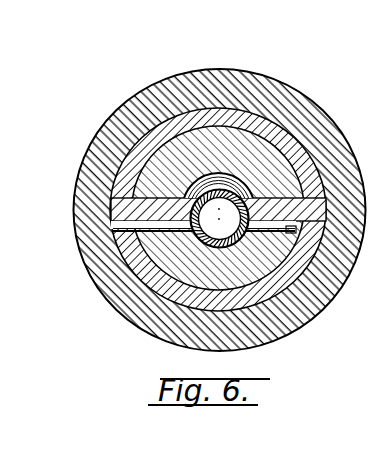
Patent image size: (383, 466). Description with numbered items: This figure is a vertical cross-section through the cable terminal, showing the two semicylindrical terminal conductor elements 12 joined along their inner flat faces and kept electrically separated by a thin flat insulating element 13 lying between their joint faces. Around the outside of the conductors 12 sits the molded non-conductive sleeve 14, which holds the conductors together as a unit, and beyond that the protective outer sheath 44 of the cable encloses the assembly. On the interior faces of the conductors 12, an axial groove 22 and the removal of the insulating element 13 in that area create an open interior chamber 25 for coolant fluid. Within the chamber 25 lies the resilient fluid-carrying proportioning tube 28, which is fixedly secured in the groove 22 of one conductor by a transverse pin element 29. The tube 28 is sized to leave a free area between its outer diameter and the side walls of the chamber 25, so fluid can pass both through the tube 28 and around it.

The terminal conductor element 12 is at (207, 118).
The insulating element 13 is at (266, 181).
The molded sleeve 14 is at (168, 74).
The axial groove 22 is at (227, 168).
The interior chamber 25 is at (181, 167).
The proportioning tube 28 is at (207, 244).
The transverse pin element 29 is at (229, 236).
The outer sheath 44 is at (68, 173).